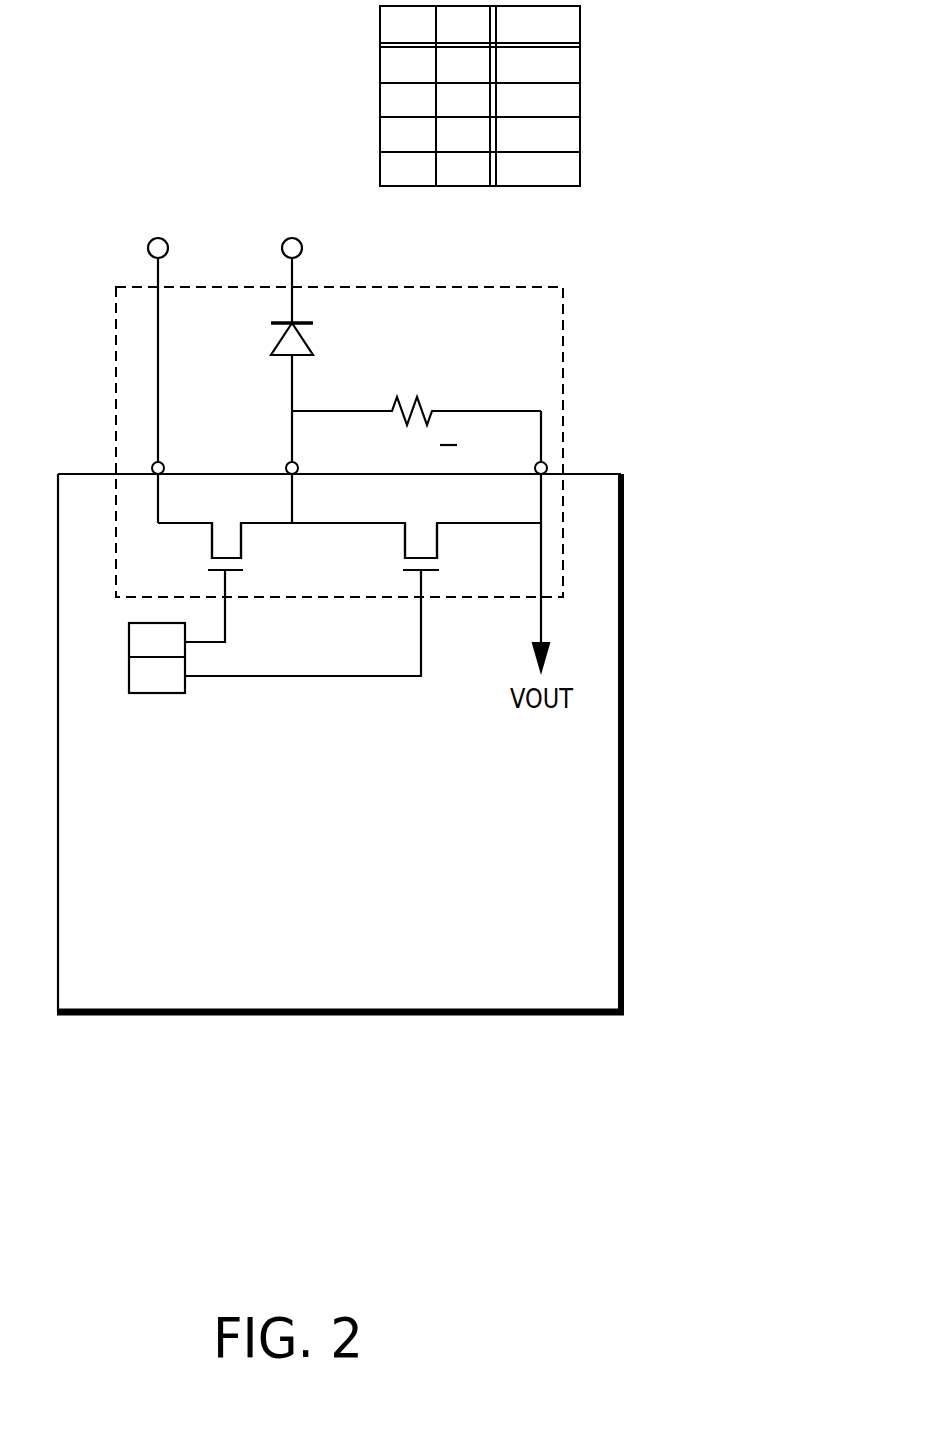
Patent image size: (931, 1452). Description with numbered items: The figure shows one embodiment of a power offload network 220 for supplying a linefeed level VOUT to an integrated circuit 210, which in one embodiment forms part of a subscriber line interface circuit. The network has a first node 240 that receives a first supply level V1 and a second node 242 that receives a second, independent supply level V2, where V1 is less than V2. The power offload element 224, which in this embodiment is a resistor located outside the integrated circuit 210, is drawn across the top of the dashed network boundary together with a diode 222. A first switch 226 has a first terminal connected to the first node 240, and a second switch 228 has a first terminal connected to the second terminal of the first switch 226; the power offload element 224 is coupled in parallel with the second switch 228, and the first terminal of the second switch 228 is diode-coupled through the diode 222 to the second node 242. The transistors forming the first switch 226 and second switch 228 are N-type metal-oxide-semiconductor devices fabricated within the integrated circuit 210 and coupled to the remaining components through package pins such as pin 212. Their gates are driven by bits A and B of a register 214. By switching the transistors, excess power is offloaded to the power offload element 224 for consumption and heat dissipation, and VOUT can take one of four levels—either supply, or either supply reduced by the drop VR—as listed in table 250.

The integrated circuit 210 is at (595, 474).
The pin 212 is at (163, 465).
The register 214 is at (160, 697).
The power offload network 220 is at (565, 349).
The diode 222 is at (316, 347).
The power offload element 224 is at (428, 400).
The first switch 226 is at (248, 568).
The second switch 228 is at (446, 566).
The first node 240 is at (142, 252).
The second node 242 is at (308, 250).
The table 250 is at (592, 100).